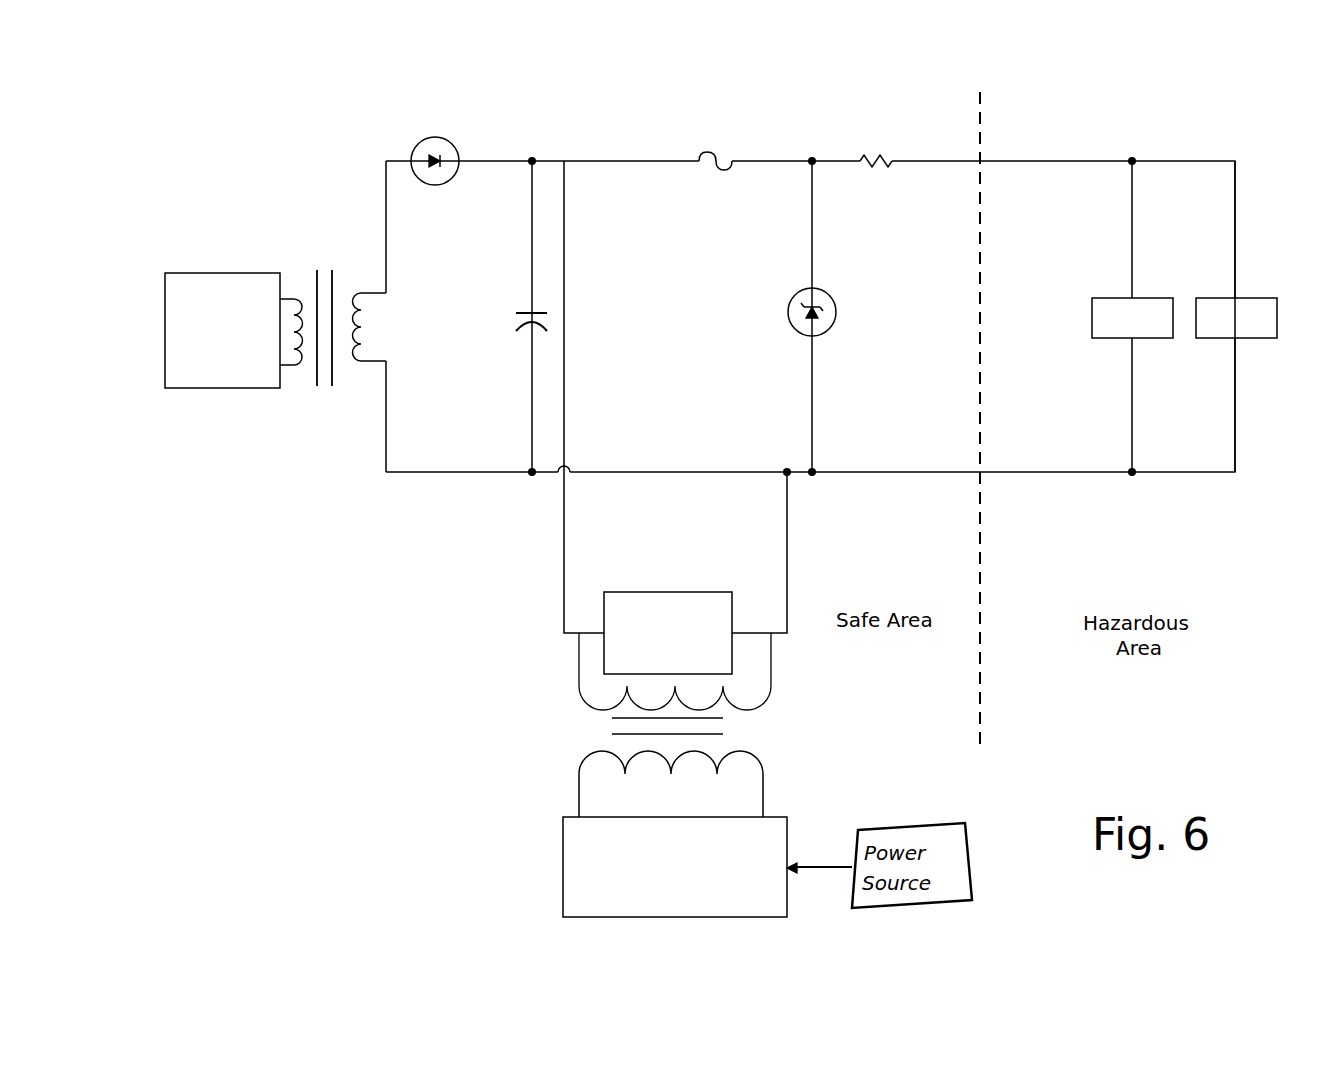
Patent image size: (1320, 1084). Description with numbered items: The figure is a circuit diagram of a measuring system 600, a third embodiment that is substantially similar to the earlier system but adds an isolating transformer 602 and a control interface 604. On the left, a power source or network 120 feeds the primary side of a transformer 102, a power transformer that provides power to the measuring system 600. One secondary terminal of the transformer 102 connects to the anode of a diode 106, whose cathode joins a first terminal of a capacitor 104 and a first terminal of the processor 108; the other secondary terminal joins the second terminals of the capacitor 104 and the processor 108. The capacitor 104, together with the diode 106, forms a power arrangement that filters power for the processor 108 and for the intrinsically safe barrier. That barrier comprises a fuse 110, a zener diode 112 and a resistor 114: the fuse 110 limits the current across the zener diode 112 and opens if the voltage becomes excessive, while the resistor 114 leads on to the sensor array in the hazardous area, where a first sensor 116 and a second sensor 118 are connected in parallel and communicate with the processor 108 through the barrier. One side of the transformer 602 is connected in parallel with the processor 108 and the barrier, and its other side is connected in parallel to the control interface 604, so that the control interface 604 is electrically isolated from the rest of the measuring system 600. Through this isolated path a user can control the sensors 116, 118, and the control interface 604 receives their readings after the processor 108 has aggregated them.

The measuring system 600 is at (404, 719).
The power source or network 120 is at (193, 388).
The transformer 102 is at (358, 362).
The diode 106 is at (451, 135).
The capacitor 104 is at (516, 333).
The fuse 110 is at (712, 152).
The zener diode 112 is at (835, 322).
The resistor 114 is at (885, 157).
The first sensor 116 is at (1108, 338).
The second sensor 118 is at (1212, 338).
The processor 108 is at (732, 659).
The transformer 602 is at (583, 702).
The control interface 604 is at (563, 868).